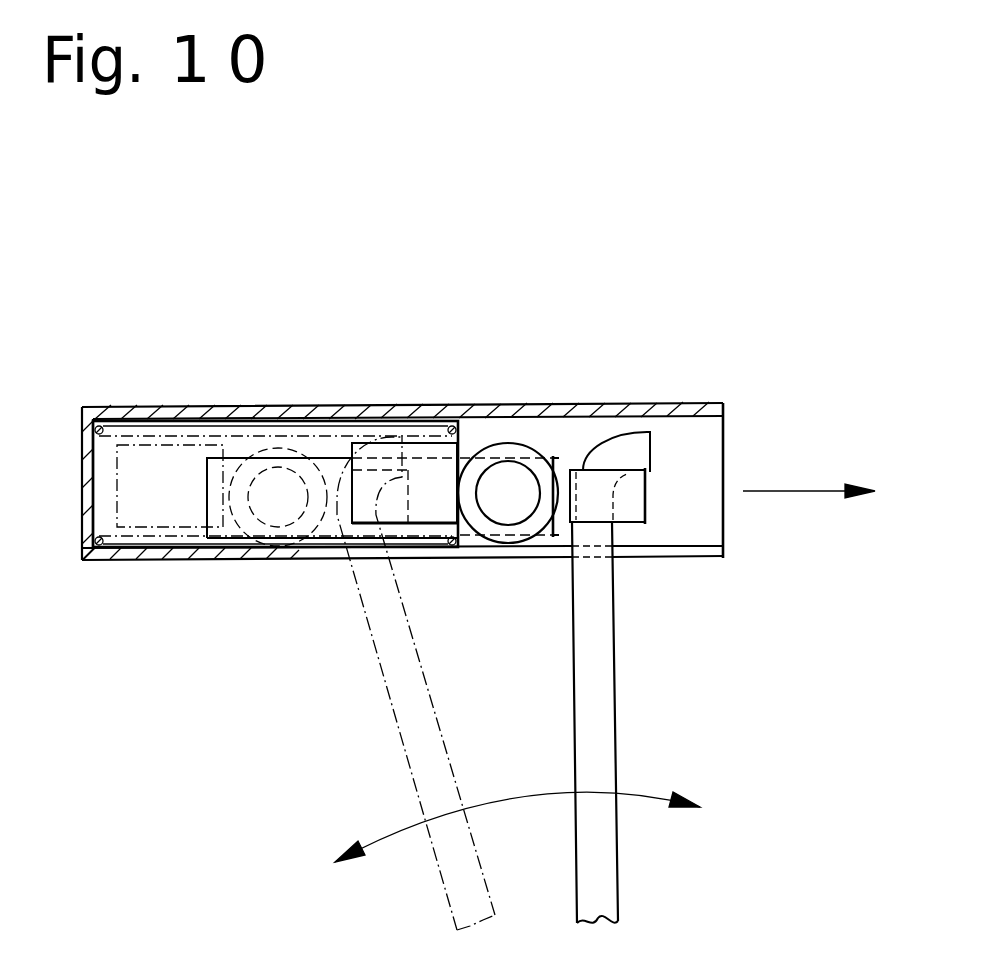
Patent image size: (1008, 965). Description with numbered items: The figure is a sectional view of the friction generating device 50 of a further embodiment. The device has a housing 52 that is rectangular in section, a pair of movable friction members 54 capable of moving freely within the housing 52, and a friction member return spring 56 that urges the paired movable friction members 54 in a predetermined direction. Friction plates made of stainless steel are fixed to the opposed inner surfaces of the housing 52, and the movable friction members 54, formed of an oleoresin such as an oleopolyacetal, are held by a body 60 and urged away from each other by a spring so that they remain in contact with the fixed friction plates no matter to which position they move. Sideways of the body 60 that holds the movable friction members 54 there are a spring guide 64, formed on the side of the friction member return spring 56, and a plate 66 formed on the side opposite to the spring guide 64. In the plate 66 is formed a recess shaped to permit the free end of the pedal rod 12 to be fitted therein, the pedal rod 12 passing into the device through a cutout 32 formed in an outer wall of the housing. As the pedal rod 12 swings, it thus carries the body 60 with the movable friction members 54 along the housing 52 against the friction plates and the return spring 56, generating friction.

The pedal rod 12 is at (417, 677).
The cutout 32 is at (653, 549).
The friction generating device 50 is at (676, 368).
The housing 52 is at (705, 403).
The movable friction member 54 is at (518, 490).
The friction member return spring 56 is at (178, 428).
The body 60 is at (477, 470).
The spring guide 64 is at (426, 448).
The plate 66 is at (630, 498).